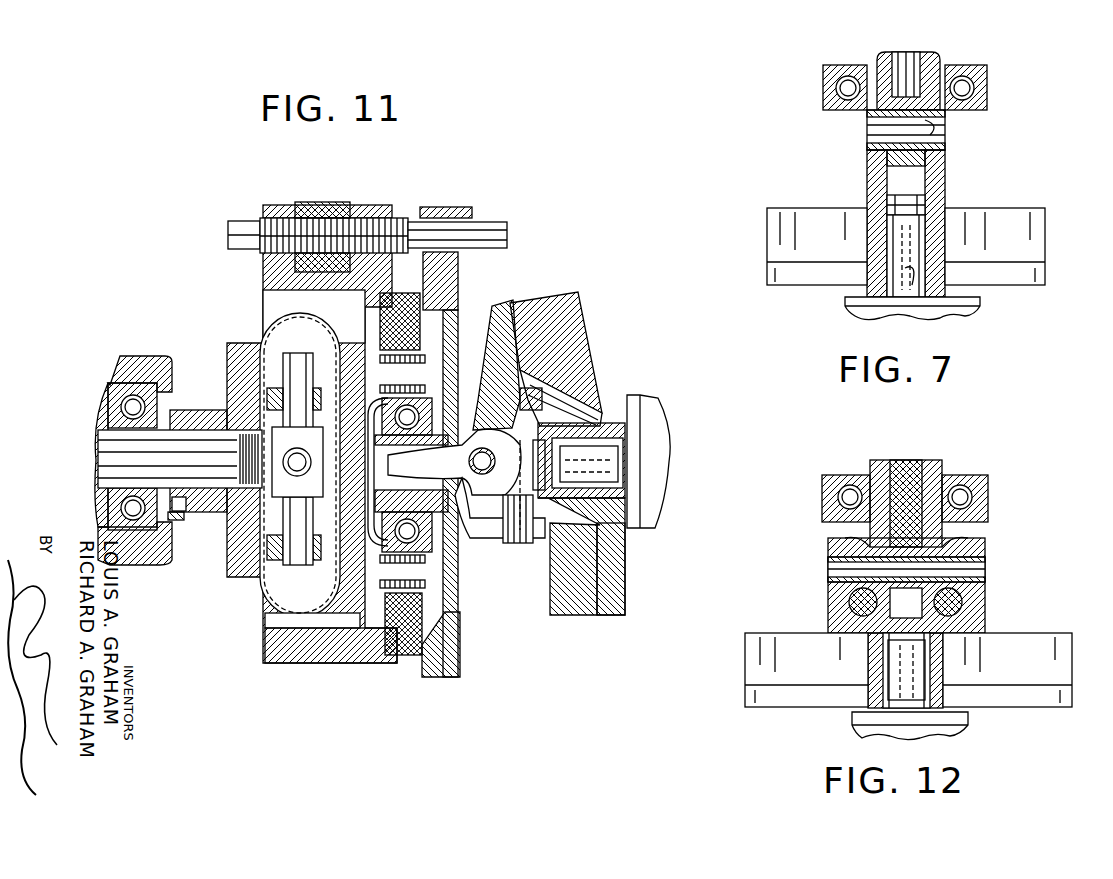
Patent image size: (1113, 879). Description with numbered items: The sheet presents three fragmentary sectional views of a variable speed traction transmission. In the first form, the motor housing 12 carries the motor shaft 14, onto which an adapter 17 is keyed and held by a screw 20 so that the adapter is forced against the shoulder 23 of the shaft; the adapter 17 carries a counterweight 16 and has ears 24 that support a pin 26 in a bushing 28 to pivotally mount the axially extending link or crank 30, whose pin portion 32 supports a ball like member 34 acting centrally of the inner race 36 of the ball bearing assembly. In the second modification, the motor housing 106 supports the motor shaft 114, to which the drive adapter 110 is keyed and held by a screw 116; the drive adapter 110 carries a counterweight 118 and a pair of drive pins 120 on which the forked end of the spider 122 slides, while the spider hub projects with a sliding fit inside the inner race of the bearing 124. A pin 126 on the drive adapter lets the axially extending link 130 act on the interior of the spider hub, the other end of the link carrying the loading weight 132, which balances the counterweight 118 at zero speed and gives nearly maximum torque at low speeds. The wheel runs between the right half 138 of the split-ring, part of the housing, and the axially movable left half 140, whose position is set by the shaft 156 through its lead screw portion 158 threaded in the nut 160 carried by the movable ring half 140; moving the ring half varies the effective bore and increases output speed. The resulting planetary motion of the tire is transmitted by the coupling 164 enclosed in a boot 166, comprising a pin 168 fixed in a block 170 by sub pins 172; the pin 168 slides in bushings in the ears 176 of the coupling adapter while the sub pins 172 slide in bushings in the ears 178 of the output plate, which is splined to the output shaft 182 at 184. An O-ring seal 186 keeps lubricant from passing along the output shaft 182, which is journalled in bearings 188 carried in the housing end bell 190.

In FIG. 7, the motor housing 12 is at (880, 312).
In FIG. 7, the motor shaft 14 is at (892, 246).
In FIG. 7, the counterweight 16 is at (976, 220).
In FIG. 7, the adapter 17 is at (775, 282).
In FIG. 7, the screw 20 is at (887, 212).
In FIG. 7, the shoulder 23 is at (912, 283).
In FIG. 7, the ears 24 is at (872, 178).
In FIG. 7, the pin 26 is at (882, 135).
In FIG. 7, the bushing 28 is at (927, 128).
In FIG. 7, the link or crank 30 is at (920, 170).
In FIG. 7, the pin portion 32 is at (912, 58).
In FIG. 7, the ball like member 34 is at (876, 70).
In FIG. 7, the inner race 36 is at (958, 68).
In FIG. 11, the motor housing 106 is at (655, 486).
In FIG. 12, the motor housing 106 is at (960, 729).
In FIG. 11, the drive adapter 110 is at (602, 572).
In FIG. 12, the drive adapter 110 is at (985, 546).
In FIG. 11, the motor shaft 114 is at (612, 452).
In FIG. 12, the motor shaft 114 is at (912, 672).
In FIG. 11, the screw 116 is at (538, 462).
In FIG. 12, the screw 116 is at (910, 603).
In FIG. 11, the counterweight 118 is at (580, 602).
In FIG. 11, the drive pins 120 is at (524, 543).
In FIG. 12, the drive pins 120 is at (848, 602).
In FIG. 11, the spider 122 is at (586, 392).
In FIG. 12, the spider 122 is at (945, 470).
In FIG. 11, the bearing 124 is at (452, 532).
In FIG. 12, the bearing 124 is at (848, 488).
In FIG. 11, the pin 126 is at (468, 465).
In FIG. 12, the pin 126 is at (852, 566).
In FIG. 11, the link 130 is at (492, 368).
In FIG. 12, the link 130 is at (905, 480).
In FIG. 11, the loading weight 132 is at (583, 296).
In FIG. 11, the right half of split-ring 138 is at (438, 650).
In FIG. 11, the left half of split-ring 140 is at (360, 652).
In FIG. 11, the shaft 156 is at (488, 232).
In FIG. 11, the lead screw portion 158 is at (275, 232).
In FIG. 11, the nut 160 is at (325, 202).
In FIG. 11, the coupling 164 is at (258, 610).
In FIG. 11, the boot 166 is at (283, 622).
In FIG. 11, the pin 168 is at (300, 352).
In FIG. 11, the block 170 is at (285, 478).
In FIG. 11, the sub pins 172 is at (304, 516).
In FIG. 11, the ears 176 is at (265, 390).
In FIG. 11, the ears 178 is at (180, 511).
In FIG. 11, the output shaft 182 is at (112, 456).
In FIG. 11, the spline 184 is at (228, 418).
In FIG. 11, the O-ring seal 186 is at (176, 521).
In FIG. 11, the bearings 188 is at (127, 408).
In FIG. 11, the housing end bell 190 is at (147, 372).